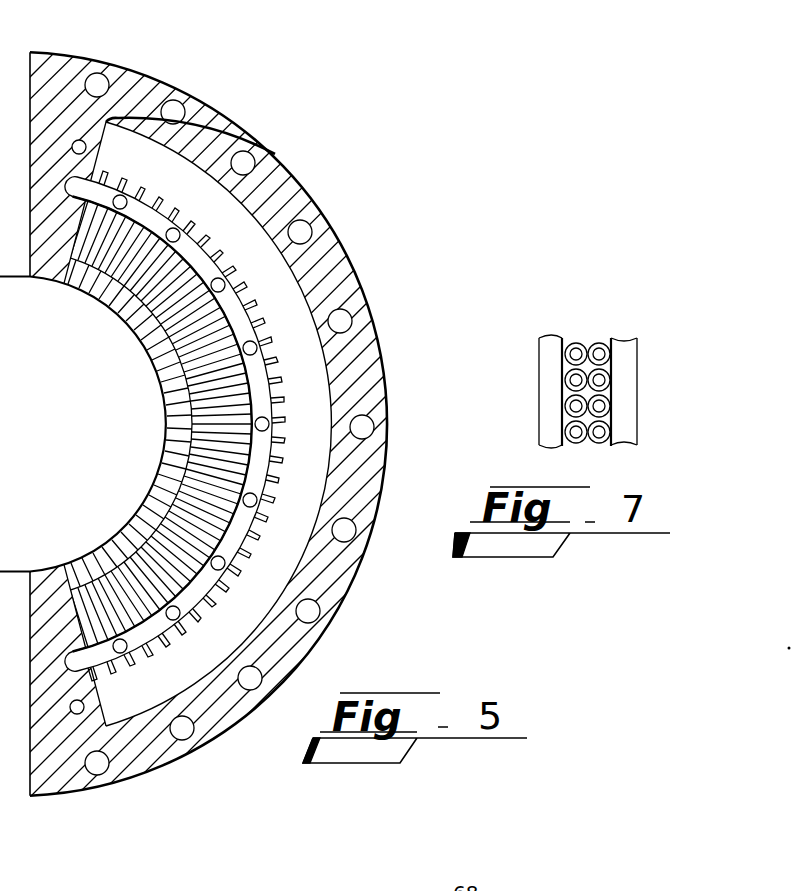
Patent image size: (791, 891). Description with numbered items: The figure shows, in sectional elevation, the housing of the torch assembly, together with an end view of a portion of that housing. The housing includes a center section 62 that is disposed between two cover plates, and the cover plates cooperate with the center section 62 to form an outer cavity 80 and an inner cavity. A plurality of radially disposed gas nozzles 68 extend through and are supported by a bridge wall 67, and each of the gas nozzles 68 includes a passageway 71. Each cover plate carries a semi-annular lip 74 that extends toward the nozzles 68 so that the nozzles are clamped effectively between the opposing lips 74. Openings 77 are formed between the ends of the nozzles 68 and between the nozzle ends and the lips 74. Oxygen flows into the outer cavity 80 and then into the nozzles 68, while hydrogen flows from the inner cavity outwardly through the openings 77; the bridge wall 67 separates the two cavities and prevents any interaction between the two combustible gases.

In FIG. 5, the center section 62 is at (270, 152).
In FIG. 5, the bridge wall 67 is at (242, 316).
In FIG. 5, the gas nozzles 68 is at (285, 375).
In FIG. 7, the gas nozzles 68 is at (578, 338).
In FIG. 7, the passageway 71 is at (601, 355).
In FIG. 7, the semi-annular lip 74 is at (543, 422).
In FIG. 7, the openings 77 is at (610, 391).
In FIG. 5, the outer cavity 80 is at (302, 465).